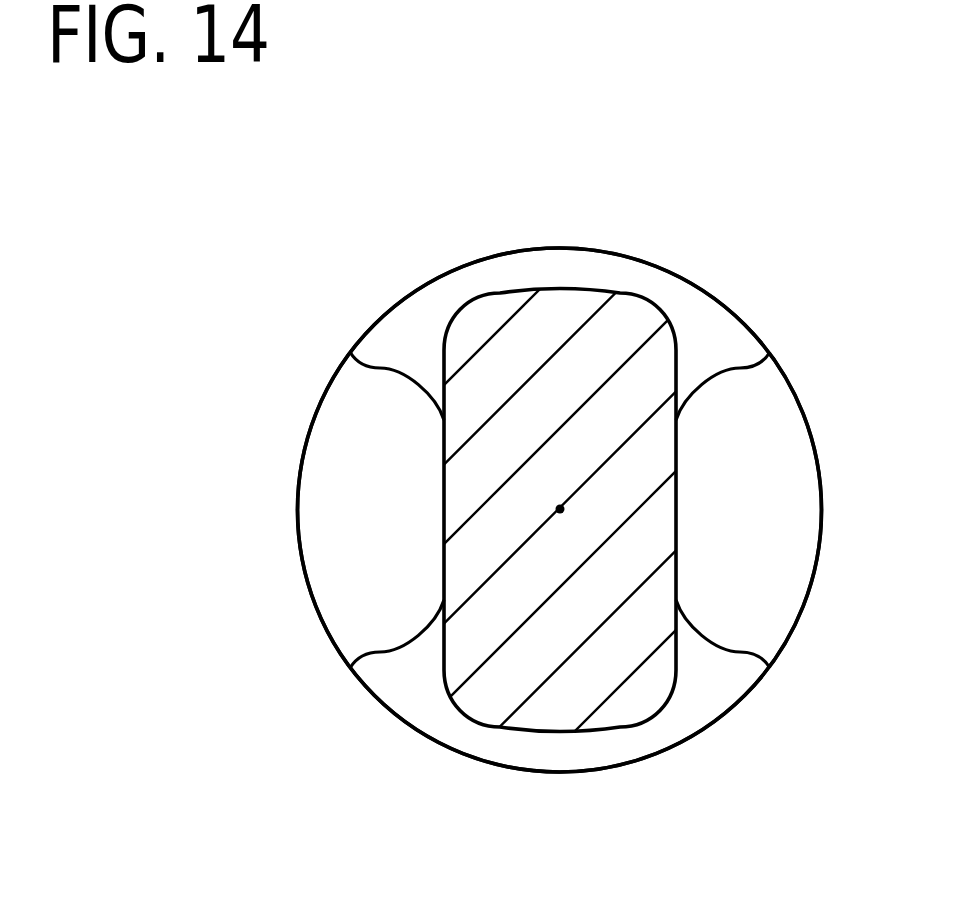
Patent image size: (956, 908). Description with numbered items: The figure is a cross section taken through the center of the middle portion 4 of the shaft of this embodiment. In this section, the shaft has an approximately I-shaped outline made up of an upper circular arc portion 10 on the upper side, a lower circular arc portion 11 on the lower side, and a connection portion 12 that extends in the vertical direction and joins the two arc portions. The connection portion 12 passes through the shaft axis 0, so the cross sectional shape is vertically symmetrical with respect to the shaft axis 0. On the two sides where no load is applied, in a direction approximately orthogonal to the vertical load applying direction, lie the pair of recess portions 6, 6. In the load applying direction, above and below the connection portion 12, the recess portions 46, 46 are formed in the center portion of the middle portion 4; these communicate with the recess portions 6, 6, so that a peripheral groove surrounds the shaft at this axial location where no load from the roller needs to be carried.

The middle portion 4 is at (415, 252).
The upper circular arc portion 10 is at (605, 280).
The lower circular arc portion 11 is at (527, 752).
The recess portion 46 is at (535, 287).
The connection portion 12 is at (490, 442).
The shaft axis 0 is at (563, 507).
The recess portion 6 is at (397, 637).